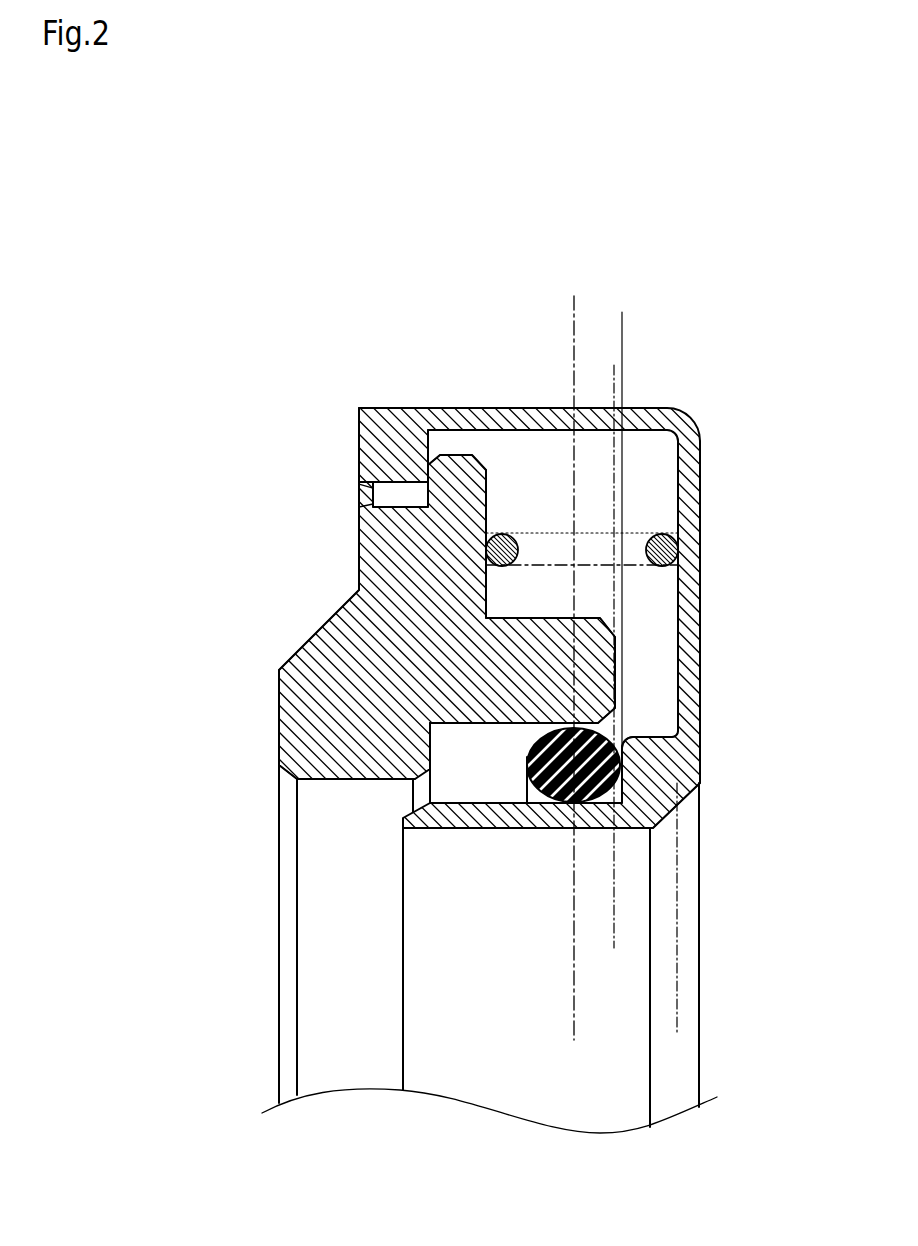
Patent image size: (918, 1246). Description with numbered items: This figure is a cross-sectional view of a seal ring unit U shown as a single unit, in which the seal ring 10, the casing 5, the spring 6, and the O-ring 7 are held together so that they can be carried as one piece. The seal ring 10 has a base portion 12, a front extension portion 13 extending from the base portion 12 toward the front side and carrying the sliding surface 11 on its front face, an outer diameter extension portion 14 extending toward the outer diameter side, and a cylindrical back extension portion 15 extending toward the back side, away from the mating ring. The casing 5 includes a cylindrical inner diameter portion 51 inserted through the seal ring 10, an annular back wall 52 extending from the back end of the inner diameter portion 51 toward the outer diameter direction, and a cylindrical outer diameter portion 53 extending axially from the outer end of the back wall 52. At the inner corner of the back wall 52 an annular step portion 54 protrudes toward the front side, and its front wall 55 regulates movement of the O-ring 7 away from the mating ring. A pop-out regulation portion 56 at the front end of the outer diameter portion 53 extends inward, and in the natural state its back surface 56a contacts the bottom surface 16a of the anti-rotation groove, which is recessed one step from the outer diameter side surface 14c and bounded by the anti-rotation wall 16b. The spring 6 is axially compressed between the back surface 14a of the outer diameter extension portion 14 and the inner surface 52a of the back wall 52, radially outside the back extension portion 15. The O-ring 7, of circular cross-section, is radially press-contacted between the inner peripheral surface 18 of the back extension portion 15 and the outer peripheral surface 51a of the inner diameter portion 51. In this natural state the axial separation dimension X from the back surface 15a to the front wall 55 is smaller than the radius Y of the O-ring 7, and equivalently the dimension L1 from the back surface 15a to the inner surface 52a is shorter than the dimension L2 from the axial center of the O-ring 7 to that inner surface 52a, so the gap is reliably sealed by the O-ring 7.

The casing 5 is at (666, 395).
The spring 6 is at (506, 538).
The O-ring 7 is at (527, 760).
The seal ring 10 is at (266, 727).
The sliding surface 11 is at (278, 752).
The base portion 12 is at (372, 654).
The front extension portion 13 is at (355, 752).
The outer diameter extension portion 14 is at (452, 480).
The back surface 14a is at (487, 480).
The outer diameter side surface 14c is at (358, 550).
The back extension portion 15 is at (592, 673).
The back surface 15a is at (617, 658).
The bottom surface 16a is at (437, 458).
The anti-rotation wall 16b is at (392, 500).
The inner peripheral surface 18 is at (610, 742).
The inner diameter portion 51 is at (533, 812).
The outer peripheral surface 51a is at (527, 782).
The back wall 52 is at (690, 522).
The inner surface 52a is at (678, 516).
The outer diameter portion 53 is at (388, 390).
The step portion 54 is at (645, 770).
The front wall 55 is at (650, 818).
The pop-out regulation portion 56 is at (357, 430).
The back surface 56a is at (440, 458).
The seal ring unit U is at (341, 399).
The radius Y is at (622, 323).
The axial separation dimension X is at (580, 372).
The axial separation dimension L1 is at (677, 937).
The axial separation dimension L2 is at (677, 1027).